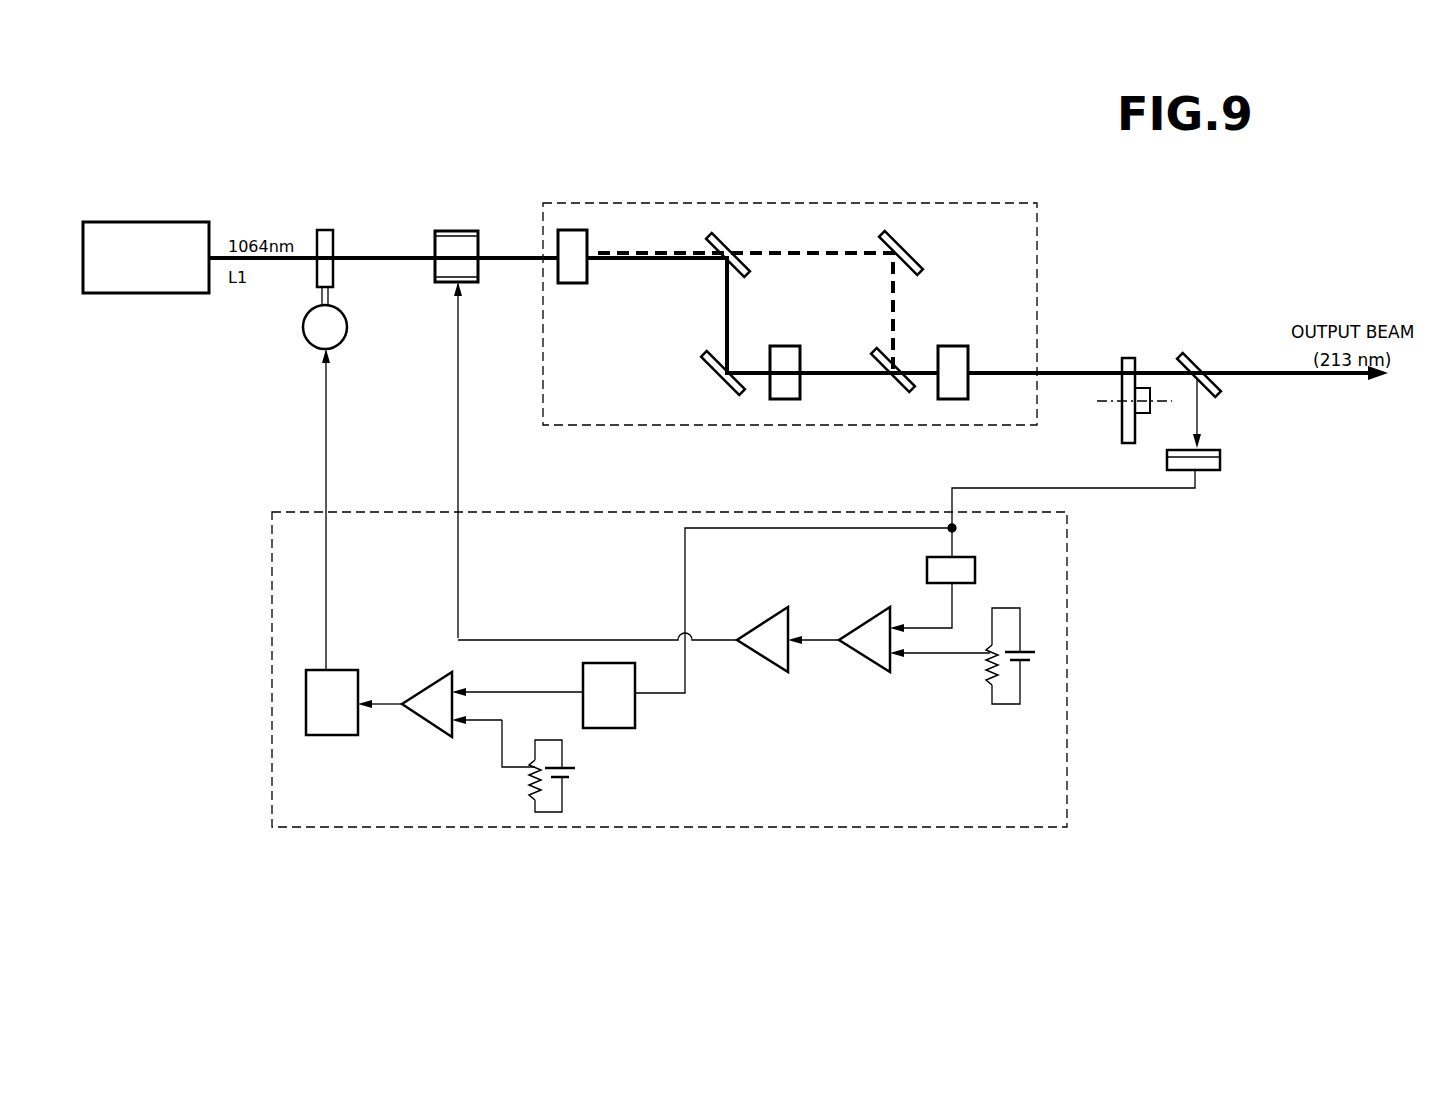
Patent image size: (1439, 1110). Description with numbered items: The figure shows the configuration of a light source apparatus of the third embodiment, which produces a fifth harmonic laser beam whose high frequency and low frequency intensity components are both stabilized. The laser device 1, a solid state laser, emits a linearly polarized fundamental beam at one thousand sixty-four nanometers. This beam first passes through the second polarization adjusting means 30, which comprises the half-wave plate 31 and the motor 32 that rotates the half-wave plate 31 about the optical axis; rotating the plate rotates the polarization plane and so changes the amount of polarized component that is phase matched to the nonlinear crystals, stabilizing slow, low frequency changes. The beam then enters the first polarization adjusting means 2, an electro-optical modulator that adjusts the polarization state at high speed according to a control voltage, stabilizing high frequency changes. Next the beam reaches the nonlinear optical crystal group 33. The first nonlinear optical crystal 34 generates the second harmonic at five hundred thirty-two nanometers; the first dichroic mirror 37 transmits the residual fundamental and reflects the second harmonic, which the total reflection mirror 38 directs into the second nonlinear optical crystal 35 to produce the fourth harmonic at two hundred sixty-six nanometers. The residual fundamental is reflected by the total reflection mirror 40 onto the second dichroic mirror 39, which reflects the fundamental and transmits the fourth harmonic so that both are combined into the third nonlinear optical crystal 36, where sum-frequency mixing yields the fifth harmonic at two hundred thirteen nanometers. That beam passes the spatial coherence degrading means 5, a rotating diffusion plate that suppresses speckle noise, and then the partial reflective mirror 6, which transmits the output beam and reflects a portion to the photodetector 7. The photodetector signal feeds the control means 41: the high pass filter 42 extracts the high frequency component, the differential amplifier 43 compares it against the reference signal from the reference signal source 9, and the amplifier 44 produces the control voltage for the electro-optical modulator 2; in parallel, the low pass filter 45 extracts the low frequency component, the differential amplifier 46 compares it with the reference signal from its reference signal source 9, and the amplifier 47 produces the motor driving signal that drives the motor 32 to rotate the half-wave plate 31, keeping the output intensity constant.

The laser device 1 is at (152, 221).
The first polarization adjusting means 2 is at (455, 230).
The spatial coherence degrading means 5 is at (1118, 423).
The partial reflective mirror 6 is at (1188, 352).
The photodetector 7 is at (1220, 458).
The reference voltage source 9 is at (1010, 608).
The second polarization adjusting means 30 is at (334, 202).
The half-wave plate 31 is at (334, 235).
The motor 32 is at (348, 330).
The nonlinear optical crystal group 33 is at (817, 202).
The first nonlinear optical crystal 34 is at (618, 233).
The second nonlinear optical crystal 35 is at (792, 346).
The third nonlinear optical crystal 36 is at (957, 343).
The first dichroic mirror 37 is at (735, 242).
The total reflection mirror 38 is at (717, 378).
The second dichroic mirror 39 is at (897, 362).
The total reflection mirror 40 is at (905, 247).
The control means 41 is at (1067, 620).
The high pass filter 42 is at (975, 570).
The differential amplifier 43 is at (883, 607).
The amplifier 44 is at (786, 607).
The low pass filter 45 is at (637, 710).
The differential amplifier 46 is at (433, 682).
The amplifier 47 is at (345, 670).